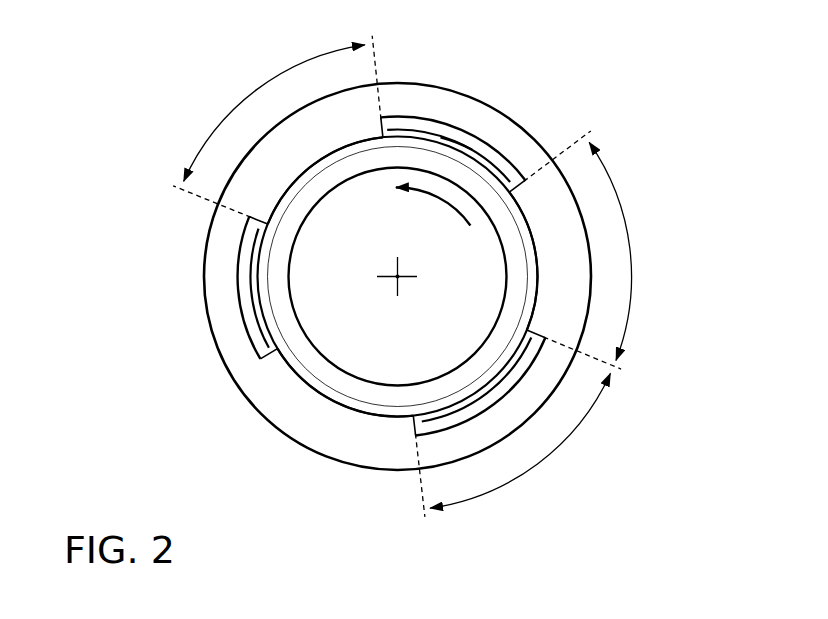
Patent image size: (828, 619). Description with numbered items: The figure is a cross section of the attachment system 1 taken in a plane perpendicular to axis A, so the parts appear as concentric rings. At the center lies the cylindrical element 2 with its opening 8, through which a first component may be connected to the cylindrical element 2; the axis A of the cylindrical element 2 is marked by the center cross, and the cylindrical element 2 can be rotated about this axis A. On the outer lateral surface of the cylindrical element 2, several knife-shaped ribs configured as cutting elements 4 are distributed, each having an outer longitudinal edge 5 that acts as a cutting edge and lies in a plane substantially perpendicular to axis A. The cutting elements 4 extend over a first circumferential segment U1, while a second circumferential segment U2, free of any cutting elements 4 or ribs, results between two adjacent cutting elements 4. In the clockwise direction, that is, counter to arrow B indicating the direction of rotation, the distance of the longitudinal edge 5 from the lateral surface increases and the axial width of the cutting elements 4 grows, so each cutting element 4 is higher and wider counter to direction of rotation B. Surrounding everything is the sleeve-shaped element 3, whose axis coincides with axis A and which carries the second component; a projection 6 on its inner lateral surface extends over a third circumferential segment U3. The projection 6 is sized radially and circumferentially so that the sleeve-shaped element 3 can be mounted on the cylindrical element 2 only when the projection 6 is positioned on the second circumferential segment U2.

The attachment system 1 is at (187, 92).
The cylindrical element 2 is at (353, 389).
The sleeve-shaped element 3 is at (328, 113).
The cutting element 4 is at (255, 242).
The longitudinal edge 5 is at (477, 147).
The projection 6 is at (280, 185).
The opening 8 is at (460, 327).
The axis A is at (395, 278).
The direction of rotation B is at (443, 198).
The first circumferential segment U1 is at (520, 441).
The second circumferential segment U2 is at (628, 251).
The third circumferential segment U3 is at (274, 113).